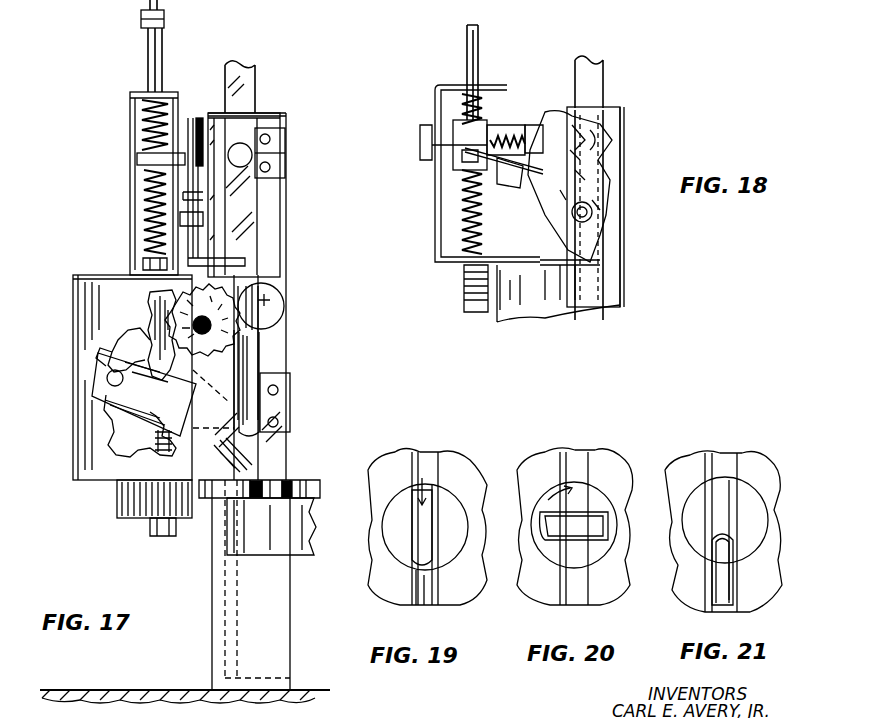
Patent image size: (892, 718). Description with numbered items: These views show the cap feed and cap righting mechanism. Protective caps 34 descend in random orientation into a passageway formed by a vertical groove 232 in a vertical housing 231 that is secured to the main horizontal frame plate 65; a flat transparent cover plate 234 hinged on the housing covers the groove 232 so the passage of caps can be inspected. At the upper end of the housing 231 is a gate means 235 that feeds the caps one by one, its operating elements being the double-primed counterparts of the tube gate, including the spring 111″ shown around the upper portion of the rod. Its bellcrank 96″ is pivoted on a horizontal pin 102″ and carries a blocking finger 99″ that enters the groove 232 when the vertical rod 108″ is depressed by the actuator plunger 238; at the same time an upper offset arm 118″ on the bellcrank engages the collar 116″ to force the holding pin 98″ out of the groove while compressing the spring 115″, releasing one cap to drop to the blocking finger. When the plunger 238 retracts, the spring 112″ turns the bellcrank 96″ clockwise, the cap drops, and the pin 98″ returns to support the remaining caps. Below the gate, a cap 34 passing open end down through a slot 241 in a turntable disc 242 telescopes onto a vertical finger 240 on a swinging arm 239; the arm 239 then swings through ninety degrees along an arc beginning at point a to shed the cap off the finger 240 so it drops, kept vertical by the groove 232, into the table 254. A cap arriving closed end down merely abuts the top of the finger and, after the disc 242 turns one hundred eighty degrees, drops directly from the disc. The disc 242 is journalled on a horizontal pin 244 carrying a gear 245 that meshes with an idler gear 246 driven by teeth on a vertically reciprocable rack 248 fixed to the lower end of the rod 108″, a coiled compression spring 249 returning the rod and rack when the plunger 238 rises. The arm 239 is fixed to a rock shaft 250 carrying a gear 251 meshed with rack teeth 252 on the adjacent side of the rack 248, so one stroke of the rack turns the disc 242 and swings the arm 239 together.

In FIG. 17, the actuator plunger 238 is at (164, 17).
In FIG. 17, the vertical rod 108 is at (162, 55).
In FIG. 18, the vertical rod 108 is at (479, 54).
In FIG. 17, the spring 111 is at (146, 114).
In FIG. 18, the spring 111 is at (462, 100).
In FIG. 17, the spring 112 is at (148, 184).
In FIG. 18, the spring 112 is at (466, 210).
In FIG. 17, the bellcrank 96 is at (196, 190).
In FIG. 18, the bellcrank 96 is at (590, 180).
In FIG. 17, the horizontal pin 102 is at (186, 224).
In FIG. 18, the horizontal pin 102 is at (594, 213).
In FIG. 17, the blocking finger 99 is at (232, 258).
In FIG. 18, the blocking finger 99 is at (600, 259).
In FIG. 17, the transparent cover plate 234 is at (280, 242).
In FIG. 17, the vertical groove 232 is at (258, 207).
In FIG. 18, the vertical groove 232 is at (606, 102).
In FIG. 19, the vertical groove 232 is at (425, 460).
In FIG. 20, the vertical groove 232 is at (578, 462).
In FIG. 21, the vertical groove 232 is at (728, 465).
In FIG. 17, the gate means 235 is at (290, 110).
In FIG. 18, the gate means 235 is at (632, 104).
In FIG. 17, the housing 231 is at (300, 174).
In FIG. 18, the housing 231 is at (624, 277).
In FIG. 17, the swinging arm 239 is at (132, 377).
In FIG. 17, the idler gear 246 is at (172, 300).
In FIG. 17, the gear 245 is at (220, 330).
In FIG. 17, the vertically reciprocable rack 248 is at (152, 312).
In FIG. 18, the vertically reciprocable rack 248 is at (464, 292).
In FIG. 17, the rack teeth 252 is at (112, 340).
In FIG. 17, the rock shaft 250 is at (107, 378).
In FIG. 17, the gear 251 is at (106, 412).
In FIG. 17, the coiled compression spring 249 is at (156, 446).
In FIG. 17, the turntable disc 242 is at (280, 318).
In FIG. 19, the turntable disc 242 is at (450, 500).
In FIG. 20, the turntable disc 242 is at (592, 485).
In FIG. 21, the turntable disc 242 is at (755, 508).
In FIG. 17, the horizontal pin 244 is at (272, 304).
In FIG. 17, the slot 241 is at (264, 286).
In FIG. 19, the slot 241 is at (438, 485).
In FIG. 21, the slot 241 is at (735, 490).
In FIG. 17, the vertical finger 240 is at (262, 362).
In FIG. 19, the vertical finger 240 is at (428, 590).
In FIG. 17, the protective cap 34 is at (272, 337).
In FIG. 19, the protective cap 34 is at (414, 532).
In FIG. 20, the protective cap 34 is at (568, 532).
In FIG. 21, the protective cap 34 is at (726, 577).
In FIG. 17, the arc a–b a is at (178, 500).
In FIG. 17, the table 254 is at (270, 545).
In FIG. 17, the main horizontal frame plate 65 is at (205, 688).
In FIG. 18, the collar 116 is at (545, 124).
In FIG. 18, the upper offset arm 118 is at (560, 120).
In FIG. 18, the spring 115 is at (516, 176).
In FIG. 18, the holding pin 98 is at (603, 143).